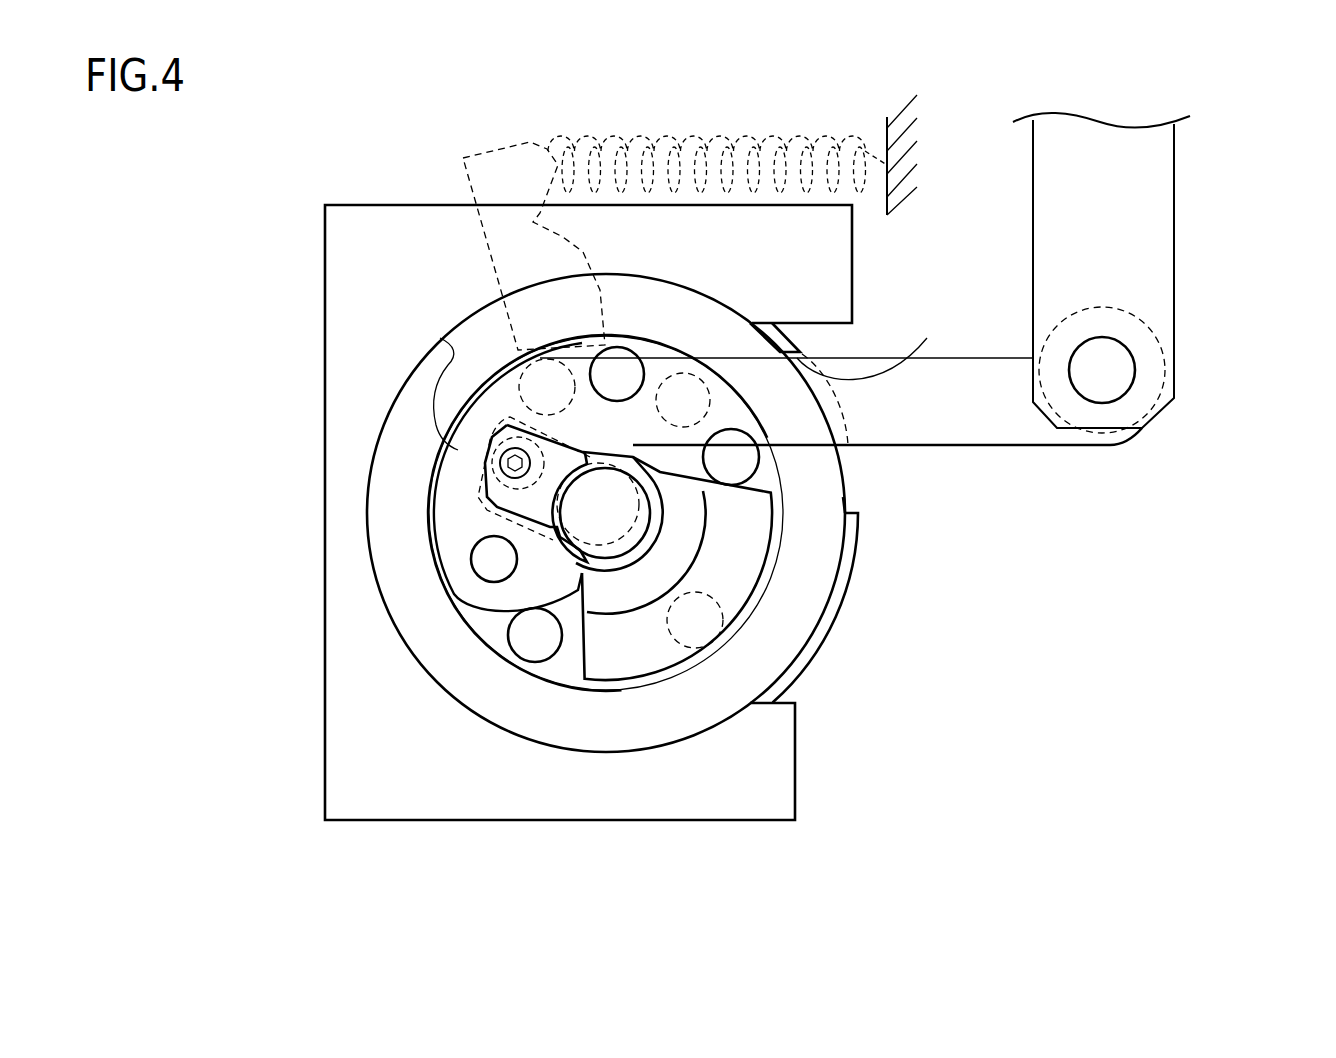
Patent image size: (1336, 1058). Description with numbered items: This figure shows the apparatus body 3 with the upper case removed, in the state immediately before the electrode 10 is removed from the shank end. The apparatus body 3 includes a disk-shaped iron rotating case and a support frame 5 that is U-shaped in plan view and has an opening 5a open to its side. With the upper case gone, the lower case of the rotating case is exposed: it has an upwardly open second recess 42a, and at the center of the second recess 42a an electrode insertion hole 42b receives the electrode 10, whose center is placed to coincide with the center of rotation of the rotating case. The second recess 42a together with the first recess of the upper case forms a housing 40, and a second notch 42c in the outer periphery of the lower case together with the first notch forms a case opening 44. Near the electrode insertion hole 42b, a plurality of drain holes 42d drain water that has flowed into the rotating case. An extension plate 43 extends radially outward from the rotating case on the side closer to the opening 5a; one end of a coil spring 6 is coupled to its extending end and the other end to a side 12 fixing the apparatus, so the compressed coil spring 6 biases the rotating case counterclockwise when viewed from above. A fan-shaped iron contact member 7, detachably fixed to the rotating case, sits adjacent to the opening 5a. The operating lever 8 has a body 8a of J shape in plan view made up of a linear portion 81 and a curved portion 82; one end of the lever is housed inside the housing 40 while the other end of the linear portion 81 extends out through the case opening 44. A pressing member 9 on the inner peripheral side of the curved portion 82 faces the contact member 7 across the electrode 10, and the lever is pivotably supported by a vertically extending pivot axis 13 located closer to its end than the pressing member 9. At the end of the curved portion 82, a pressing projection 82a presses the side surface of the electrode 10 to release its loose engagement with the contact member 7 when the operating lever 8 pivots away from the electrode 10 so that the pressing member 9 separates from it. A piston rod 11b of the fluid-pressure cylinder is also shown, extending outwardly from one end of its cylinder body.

The apparatus body 3 is at (335, 133).
The support frame 5 is at (412, 205).
The opening 5a is at (835, 328).
The coil spring 6 is at (713, 138).
The contact member 7 is at (577, 660).
The operating lever 8 is at (1018, 458).
The body 8a is at (376, 275).
The linear portion 81 is at (722, 360).
The curved portion 82 is at (448, 350).
The pressing projection 82a is at (573, 527).
The pressing member 9 is at (510, 500).
The electrode 10 is at (600, 485).
The piston rod 11b is at (1174, 218).
The side fixing the apparatus 12 is at (887, 130).
The pivot axis 13 is at (470, 558).
The housing 40 is at (568, 647).
The second recess 42a is at (647, 680).
The electrode insertion hole 42b is at (492, 465).
The second notch 42c is at (843, 498).
The drain holes 42d is at (478, 776).
The extension plate 43 is at (485, 152).
The case opening 44 is at (800, 358).